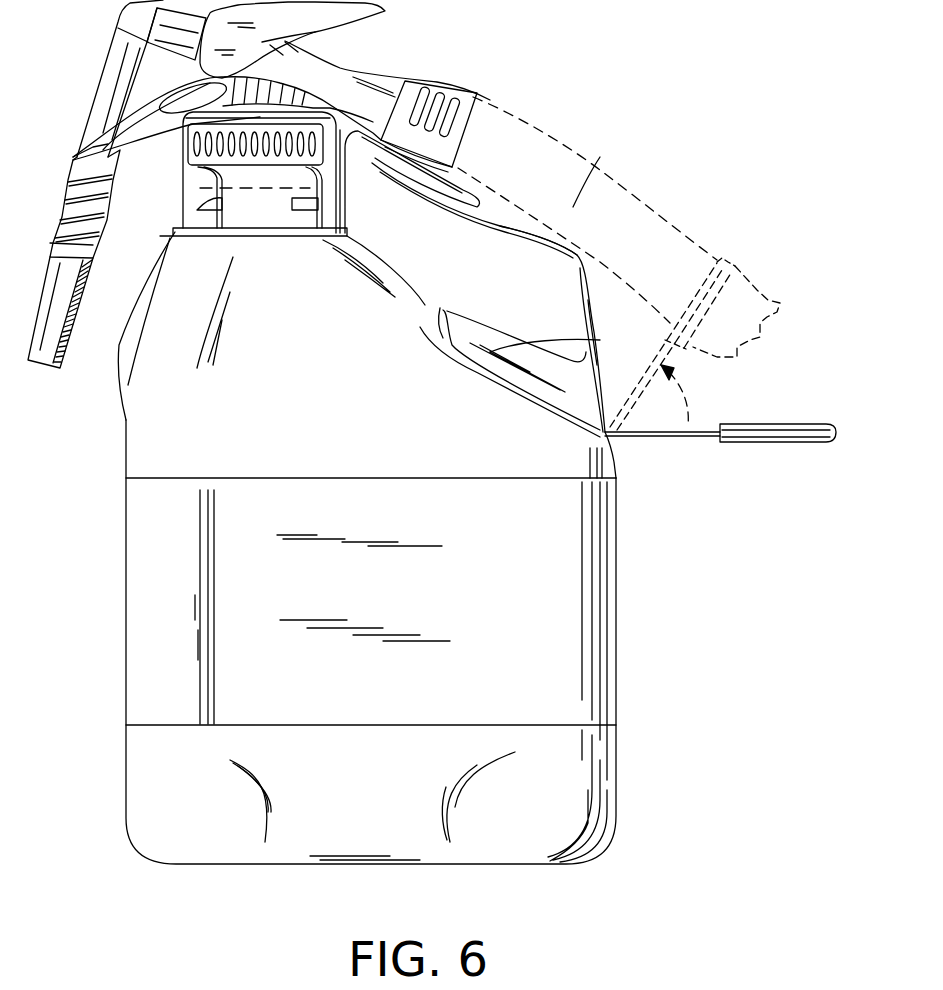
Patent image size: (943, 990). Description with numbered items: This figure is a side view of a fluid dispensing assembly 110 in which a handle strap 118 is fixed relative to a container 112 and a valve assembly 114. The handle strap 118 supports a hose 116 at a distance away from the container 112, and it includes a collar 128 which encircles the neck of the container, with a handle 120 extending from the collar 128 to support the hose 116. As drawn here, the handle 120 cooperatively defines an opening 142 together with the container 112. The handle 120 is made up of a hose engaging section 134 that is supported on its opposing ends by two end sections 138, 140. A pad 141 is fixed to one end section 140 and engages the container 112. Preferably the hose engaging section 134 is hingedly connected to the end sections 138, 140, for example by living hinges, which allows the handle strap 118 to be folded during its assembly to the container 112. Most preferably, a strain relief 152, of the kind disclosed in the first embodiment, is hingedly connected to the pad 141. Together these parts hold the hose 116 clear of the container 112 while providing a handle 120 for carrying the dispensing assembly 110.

The fluid dispensing assembly 110 is at (650, 529).
The container 112 is at (619, 647).
The valve assembly 114 is at (357, 67).
The hose 116 is at (520, 117).
The handle strap 118 is at (567, 215).
The handle 120 is at (592, 258).
The collar 128 is at (108, 372).
The hose engaging section 134 is at (493, 228).
The end section 138 is at (347, 200).
The end section 140 is at (596, 312).
The pad 141 is at (600, 340).
The opening 142 is at (556, 315).
The strain relief 152 is at (822, 444).